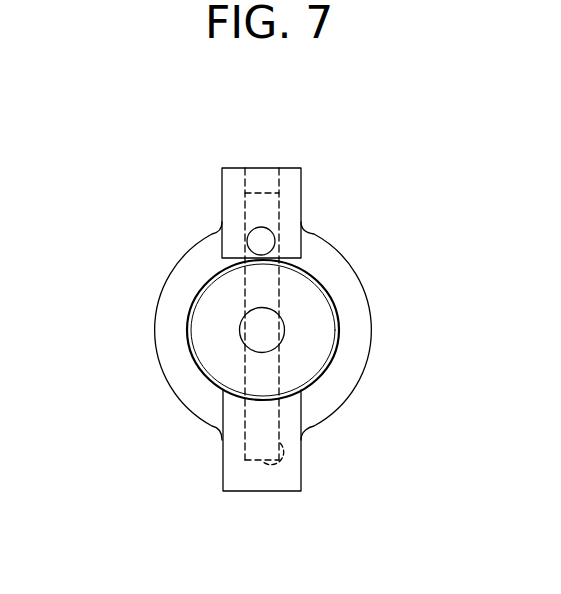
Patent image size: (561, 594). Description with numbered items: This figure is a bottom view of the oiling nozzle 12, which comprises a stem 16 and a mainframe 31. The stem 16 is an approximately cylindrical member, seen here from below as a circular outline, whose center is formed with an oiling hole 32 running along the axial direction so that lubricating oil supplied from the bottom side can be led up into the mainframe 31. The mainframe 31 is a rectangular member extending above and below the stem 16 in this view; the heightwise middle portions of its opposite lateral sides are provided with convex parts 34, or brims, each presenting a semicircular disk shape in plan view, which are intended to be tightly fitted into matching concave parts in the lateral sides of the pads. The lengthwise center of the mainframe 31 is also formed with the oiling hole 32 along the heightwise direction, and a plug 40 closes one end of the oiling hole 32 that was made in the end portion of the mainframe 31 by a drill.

The oiling nozzle 12 is at (347, 261).
The stem 16 is at (318, 325).
The mainframe 31 is at (262, 484).
The oiling hole 32 is at (263, 349).
The convex part (brim) 34 is at (175, 322).
The plug 40 is at (263, 178).